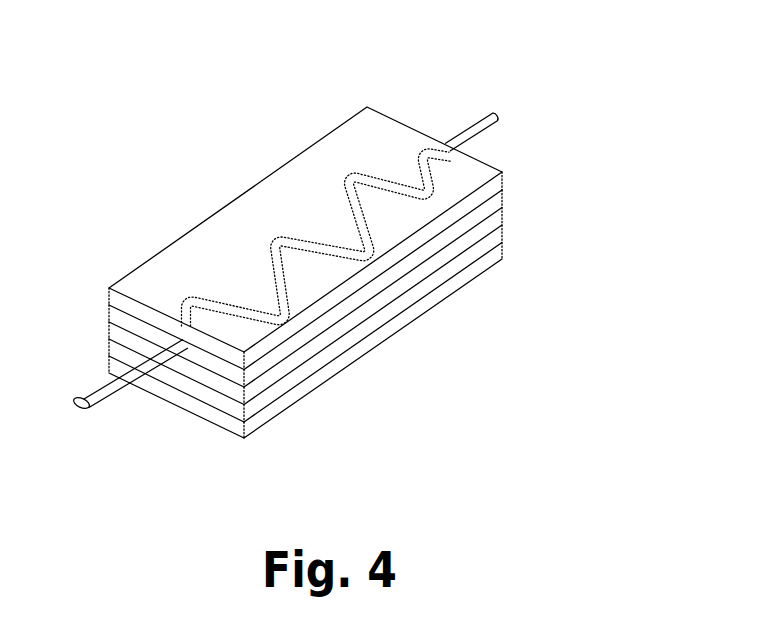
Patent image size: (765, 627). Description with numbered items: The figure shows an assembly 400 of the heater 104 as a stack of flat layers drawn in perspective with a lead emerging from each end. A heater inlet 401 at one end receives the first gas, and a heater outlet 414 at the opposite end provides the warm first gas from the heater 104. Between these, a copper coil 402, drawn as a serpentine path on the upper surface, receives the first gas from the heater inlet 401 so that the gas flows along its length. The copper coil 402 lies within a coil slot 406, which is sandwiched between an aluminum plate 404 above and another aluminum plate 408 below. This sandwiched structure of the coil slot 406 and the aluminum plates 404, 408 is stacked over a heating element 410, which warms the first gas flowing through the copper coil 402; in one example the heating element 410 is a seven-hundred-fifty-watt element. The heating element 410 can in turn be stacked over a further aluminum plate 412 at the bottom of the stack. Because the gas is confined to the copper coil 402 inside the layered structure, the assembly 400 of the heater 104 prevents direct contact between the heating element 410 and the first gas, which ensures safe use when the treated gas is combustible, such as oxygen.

The heater 104 is at (150, 153).
The assembly 400 is at (349, 46).
The heater inlet 401 is at (88, 409).
The copper coil 402 is at (378, 183).
The aluminum plate 404 is at (505, 193).
The coil slot 406 is at (488, 217).
The aluminum plate 408 is at (452, 256).
The heating element 410 is at (333, 350).
The aluminum plate 412 is at (307, 387).
The heater outlet 414 is at (502, 120).